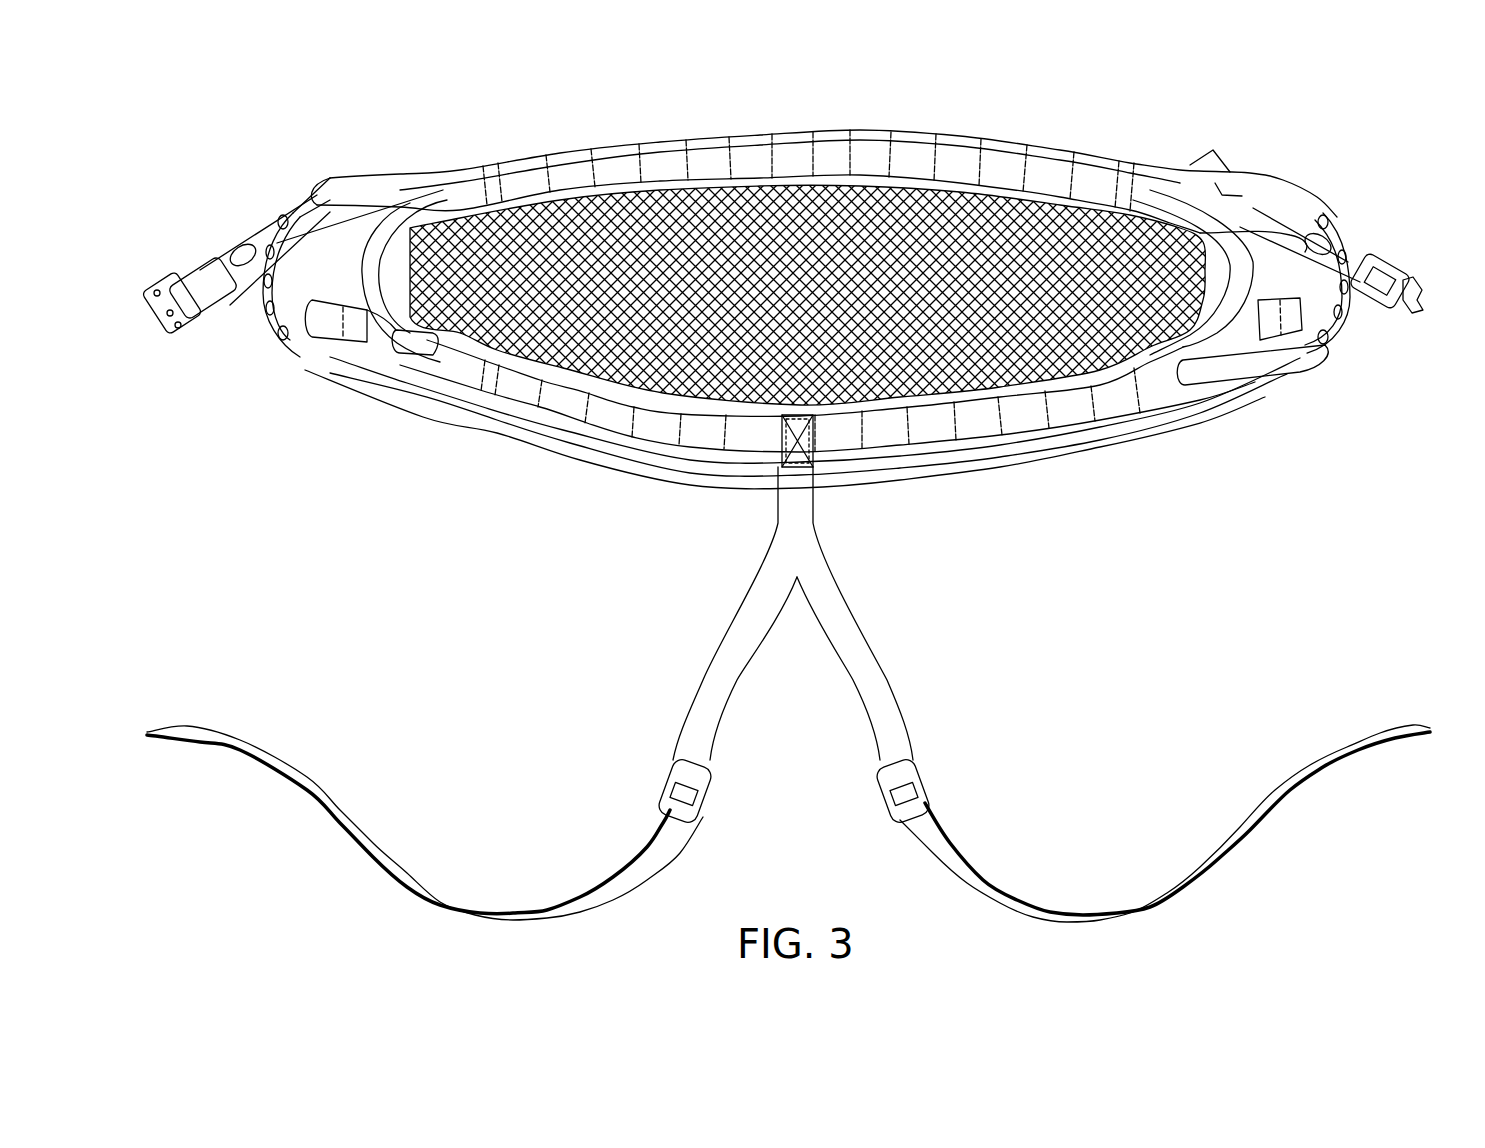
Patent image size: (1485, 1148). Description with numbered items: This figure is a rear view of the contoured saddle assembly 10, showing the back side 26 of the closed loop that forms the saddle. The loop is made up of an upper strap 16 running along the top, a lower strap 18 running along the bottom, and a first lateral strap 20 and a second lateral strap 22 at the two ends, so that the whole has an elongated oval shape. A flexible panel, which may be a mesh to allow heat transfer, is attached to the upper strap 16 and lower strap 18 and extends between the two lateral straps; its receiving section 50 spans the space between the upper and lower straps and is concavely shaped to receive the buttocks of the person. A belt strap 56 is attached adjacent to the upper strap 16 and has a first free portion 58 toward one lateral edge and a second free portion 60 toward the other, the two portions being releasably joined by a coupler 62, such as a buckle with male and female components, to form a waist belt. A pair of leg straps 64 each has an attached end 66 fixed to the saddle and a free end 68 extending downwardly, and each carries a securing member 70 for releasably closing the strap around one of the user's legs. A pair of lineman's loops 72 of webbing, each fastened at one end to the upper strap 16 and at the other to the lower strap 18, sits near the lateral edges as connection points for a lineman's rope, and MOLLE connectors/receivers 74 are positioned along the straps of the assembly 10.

The contoured saddle assembly 10 is at (1210, 510).
The upper strap 16 is at (1092, 170).
The lower strap 18 is at (1025, 428).
The first lateral strap 20 is at (288, 312).
The second lateral strap 22 is at (1340, 232).
The back side 26 is at (1218, 193).
The receiving section 50 is at (851, 245).
The belt strap 56 is at (1277, 222).
The first free portion 58 is at (200, 275).
The second free portion 60 is at (1363, 257).
The coupler 62 is at (155, 322).
The leg straps 64 is at (900, 695).
The attached end 66 is at (815, 445).
The free end 68 is at (1428, 726).
The securing member 70 is at (920, 810).
The lineman's loops 72 is at (385, 318).
The MOLLE connectors/receivers 74 is at (562, 158).